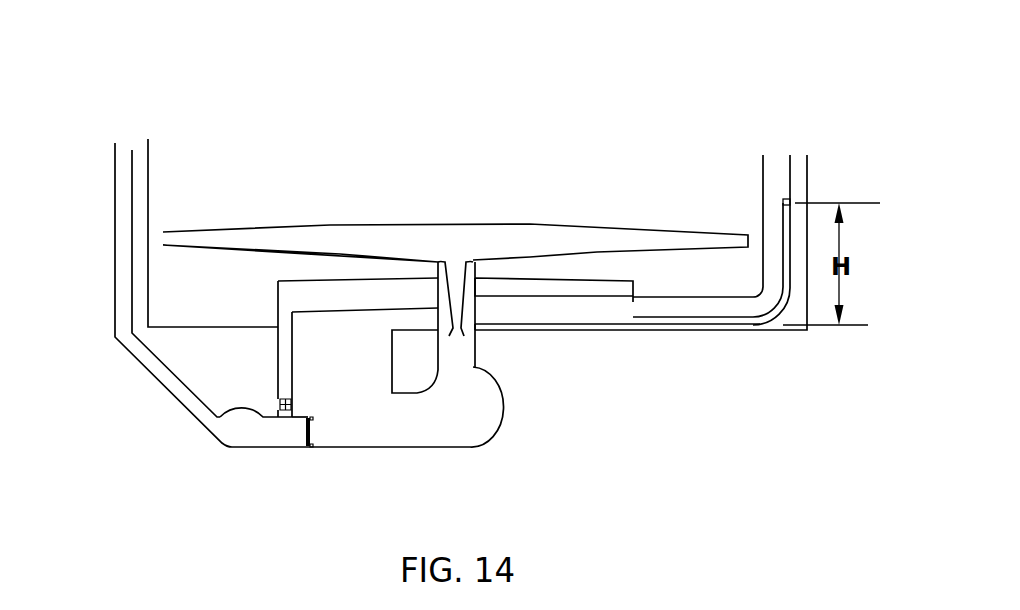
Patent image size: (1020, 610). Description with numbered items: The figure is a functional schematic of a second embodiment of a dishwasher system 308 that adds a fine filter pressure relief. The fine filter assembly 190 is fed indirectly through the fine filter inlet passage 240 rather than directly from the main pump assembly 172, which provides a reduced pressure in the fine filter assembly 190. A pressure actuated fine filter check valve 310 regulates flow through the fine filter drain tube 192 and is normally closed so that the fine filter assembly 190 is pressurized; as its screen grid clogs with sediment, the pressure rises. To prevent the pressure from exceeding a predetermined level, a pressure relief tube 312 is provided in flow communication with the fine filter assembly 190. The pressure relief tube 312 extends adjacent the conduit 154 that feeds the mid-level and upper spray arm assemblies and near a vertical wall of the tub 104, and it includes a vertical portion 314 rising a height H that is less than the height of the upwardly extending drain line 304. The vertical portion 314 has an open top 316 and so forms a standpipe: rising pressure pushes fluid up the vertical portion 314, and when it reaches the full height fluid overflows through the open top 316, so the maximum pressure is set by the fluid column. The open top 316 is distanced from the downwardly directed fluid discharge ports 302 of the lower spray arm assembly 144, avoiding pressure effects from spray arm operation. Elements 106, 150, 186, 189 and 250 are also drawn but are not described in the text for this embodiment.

The tub 104 is at (765, 337).
The printhead 106 is at (704, 148).
The lower spray arm assembly 144 is at (480, 210).
The body 150 is at (308, 332).
The conduit 154 is at (598, 315).
The main pump assembly 172 is at (472, 435).
The clip 186 is at (308, 452).
The bump 189 is at (241, 420).
The fine filter assembly 190 is at (318, 295).
The fine filter drain tube 192 is at (282, 378).
The fine filter inlet passage 240 is at (522, 283).
The nozzle 250 is at (475, 344).
The fluid discharge ports 302 is at (367, 254).
The drain line 304 is at (123, 221).
The dishwasher system 308 is at (637, 82).
The fine filter check valve 310 is at (290, 402).
The pressure relief tube 312 is at (724, 340).
The vertical portion 314 is at (783, 228).
The open top 316 is at (788, 199).